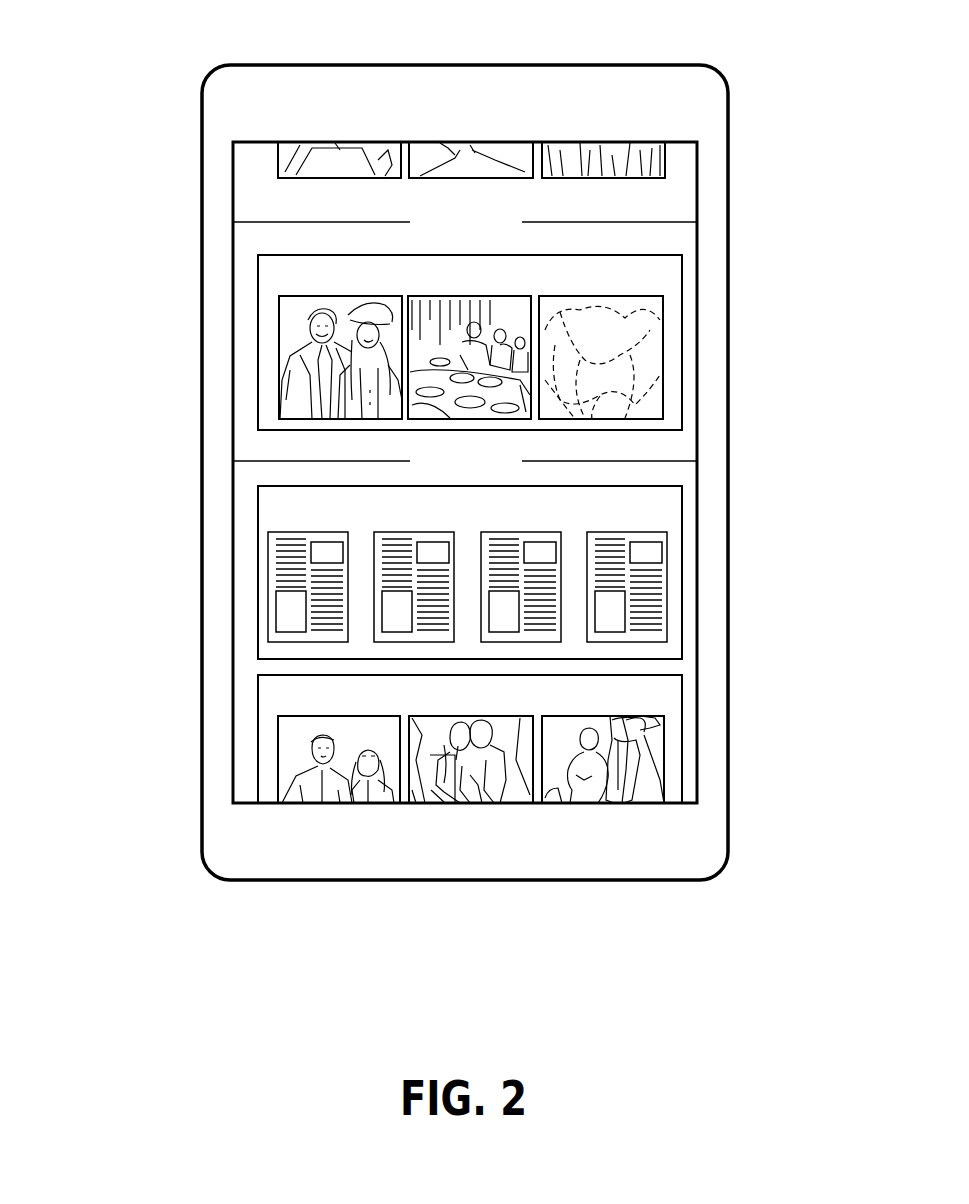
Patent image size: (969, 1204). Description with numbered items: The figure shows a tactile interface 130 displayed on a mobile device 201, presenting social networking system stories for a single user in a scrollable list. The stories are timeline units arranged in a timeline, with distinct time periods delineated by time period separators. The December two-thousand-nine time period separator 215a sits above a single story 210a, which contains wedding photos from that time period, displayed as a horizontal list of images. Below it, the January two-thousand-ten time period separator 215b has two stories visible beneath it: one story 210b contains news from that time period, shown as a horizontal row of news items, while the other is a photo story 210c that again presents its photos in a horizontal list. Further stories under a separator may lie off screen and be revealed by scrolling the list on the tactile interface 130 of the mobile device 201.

The mobile device 201 is at (240, 65).
The tactile interface 130 is at (698, 142).
The December 2009 time period separator 215a is at (600, 222).
The January 2010 time period separator 215b is at (633, 458).
The story 210a is at (257, 327).
The news story 210b is at (257, 523).
The photo story 210c is at (257, 725).